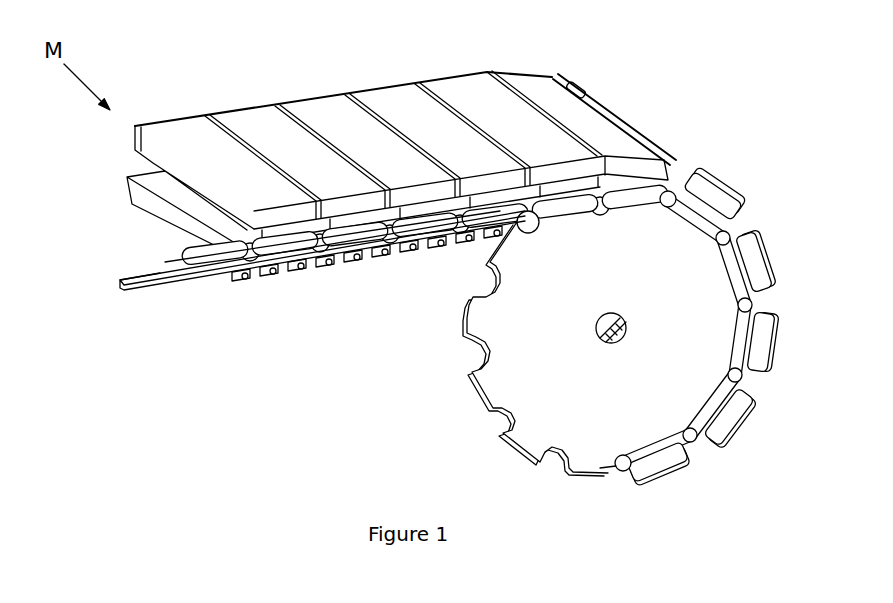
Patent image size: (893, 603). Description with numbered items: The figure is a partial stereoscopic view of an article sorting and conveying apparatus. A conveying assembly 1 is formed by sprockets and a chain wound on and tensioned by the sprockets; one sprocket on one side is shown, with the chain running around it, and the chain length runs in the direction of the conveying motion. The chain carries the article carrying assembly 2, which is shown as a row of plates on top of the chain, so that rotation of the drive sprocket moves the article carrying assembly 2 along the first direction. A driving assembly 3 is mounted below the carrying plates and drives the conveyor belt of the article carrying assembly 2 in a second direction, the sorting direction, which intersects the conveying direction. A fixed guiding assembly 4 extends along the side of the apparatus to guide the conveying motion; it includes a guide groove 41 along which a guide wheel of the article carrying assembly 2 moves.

The conveying assembly 1 is at (688, 245).
The article carrying assembly 2 is at (542, 98).
The driving assembly 3 is at (253, 273).
The guiding assembly 4 is at (141, 288).
The guide groove 41 is at (156, 276).